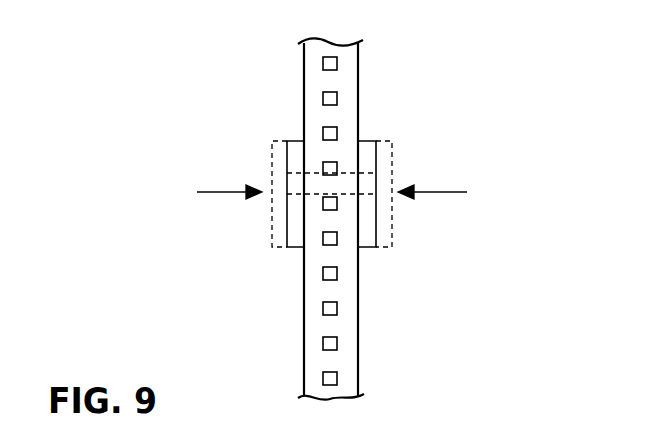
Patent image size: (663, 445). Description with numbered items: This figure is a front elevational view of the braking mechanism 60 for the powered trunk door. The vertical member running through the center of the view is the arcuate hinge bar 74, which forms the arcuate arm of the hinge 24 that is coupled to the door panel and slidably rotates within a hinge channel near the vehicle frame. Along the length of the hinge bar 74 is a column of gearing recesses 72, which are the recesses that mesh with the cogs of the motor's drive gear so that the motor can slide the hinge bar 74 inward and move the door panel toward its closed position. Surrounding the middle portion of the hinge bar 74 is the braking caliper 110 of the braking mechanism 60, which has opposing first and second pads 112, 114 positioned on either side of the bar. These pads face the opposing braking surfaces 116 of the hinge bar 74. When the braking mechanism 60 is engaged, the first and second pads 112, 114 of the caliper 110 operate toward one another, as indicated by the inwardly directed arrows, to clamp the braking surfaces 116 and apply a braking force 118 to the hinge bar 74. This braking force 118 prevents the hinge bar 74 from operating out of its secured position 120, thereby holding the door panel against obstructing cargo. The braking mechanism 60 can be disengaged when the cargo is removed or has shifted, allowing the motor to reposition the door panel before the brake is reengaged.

The hinge 24 is at (262, 76).
The arcuate hinge bar 74 is at (348, 67).
The braking surfaces 116 is at (358, 92).
The braking mechanism 60 is at (421, 133).
The first pad 112 is at (292, 142).
The second pad 114 is at (368, 160).
The braking caliper 110 is at (258, 221).
The braking force 118 is at (440, 193).
The secured position 120 is at (285, 259).
The gearing recesses 72 is at (337, 306).